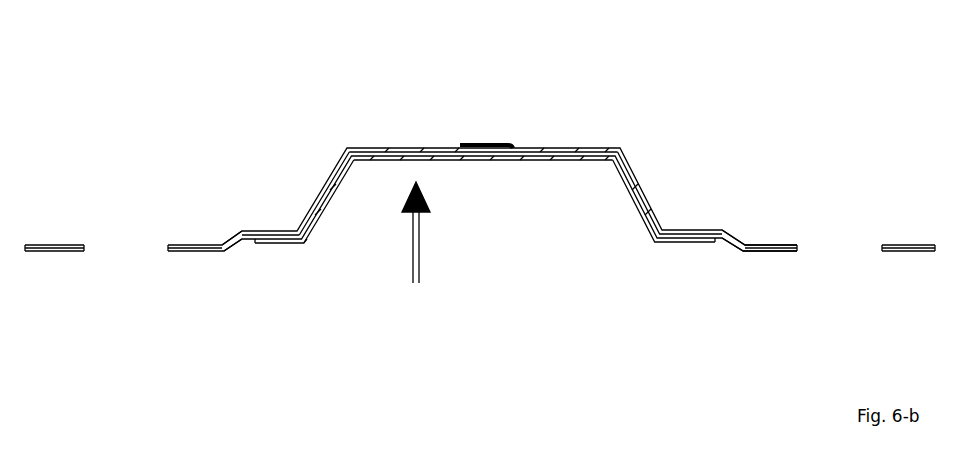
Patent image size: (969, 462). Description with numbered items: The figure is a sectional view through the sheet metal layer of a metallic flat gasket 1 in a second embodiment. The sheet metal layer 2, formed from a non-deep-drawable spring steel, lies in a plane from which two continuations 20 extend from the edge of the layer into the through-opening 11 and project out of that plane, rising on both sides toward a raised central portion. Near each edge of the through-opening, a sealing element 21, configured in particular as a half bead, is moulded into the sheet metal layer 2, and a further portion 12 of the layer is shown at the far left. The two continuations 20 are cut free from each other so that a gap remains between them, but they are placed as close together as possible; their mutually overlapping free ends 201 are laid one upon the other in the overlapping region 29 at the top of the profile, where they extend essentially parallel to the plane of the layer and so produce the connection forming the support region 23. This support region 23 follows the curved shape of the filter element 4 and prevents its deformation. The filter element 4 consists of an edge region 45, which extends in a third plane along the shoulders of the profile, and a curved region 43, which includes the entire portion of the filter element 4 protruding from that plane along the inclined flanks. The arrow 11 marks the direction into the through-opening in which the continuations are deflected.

The metallic flat gasket 1 is at (118, 171).
The adjacent segment 12 is at (126, 247).
The continuation 20 is at (320, 193).
The sealing element 21 is at (230, 232).
The edge region 45 is at (282, 240).
The curved region 43 is at (320, 210).
The support region 23 is at (572, 153).
The free end 201 is at (458, 148).
The overlapping region 29 is at (477, 148).
The filter element 4 is at (637, 197).
The sheet metal layer 2 is at (765, 252).
The through-opening 11 is at (464, 261).